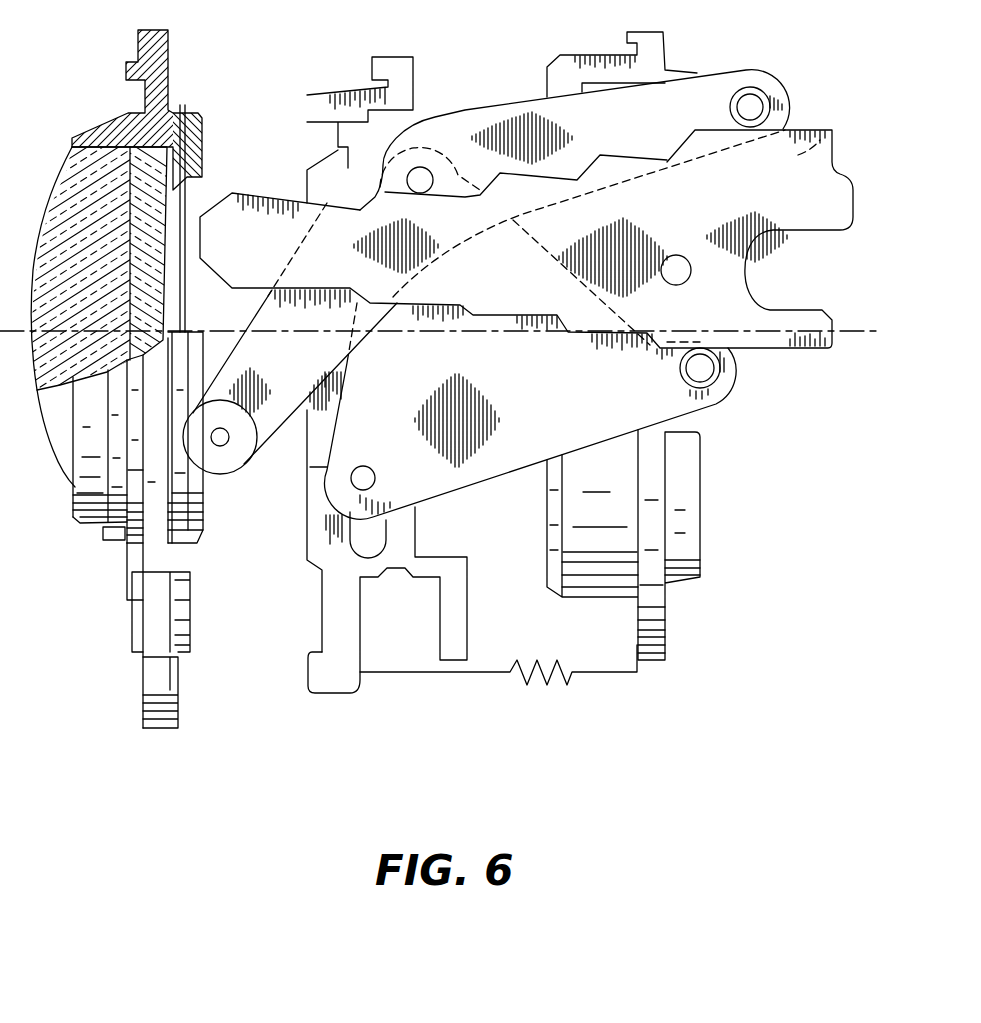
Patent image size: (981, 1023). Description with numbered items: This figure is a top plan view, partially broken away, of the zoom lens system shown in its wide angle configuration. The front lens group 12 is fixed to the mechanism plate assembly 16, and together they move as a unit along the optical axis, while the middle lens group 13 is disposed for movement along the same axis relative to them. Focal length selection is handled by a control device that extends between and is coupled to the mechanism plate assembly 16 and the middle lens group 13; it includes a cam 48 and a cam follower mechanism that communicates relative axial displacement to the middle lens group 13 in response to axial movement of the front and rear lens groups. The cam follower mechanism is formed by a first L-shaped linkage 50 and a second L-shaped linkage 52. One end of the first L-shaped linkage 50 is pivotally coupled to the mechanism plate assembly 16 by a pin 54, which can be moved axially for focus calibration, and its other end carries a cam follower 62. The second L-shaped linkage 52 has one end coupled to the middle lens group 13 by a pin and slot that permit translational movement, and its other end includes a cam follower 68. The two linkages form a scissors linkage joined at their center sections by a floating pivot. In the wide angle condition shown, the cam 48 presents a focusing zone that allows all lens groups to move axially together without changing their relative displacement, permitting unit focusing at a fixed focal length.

The front lens group 12 is at (168, 78).
The middle lens group 13 is at (667, 637).
The mechanism plate assembly 16 is at (327, 618).
The cam 48 is at (828, 130).
The first L-shaped linkage 50 is at (458, 120).
The second L-shaped linkage 52 is at (680, 402).
The pin 54 is at (226, 444).
The cam follower 62 is at (765, 102).
The cam follower 68 is at (723, 380).